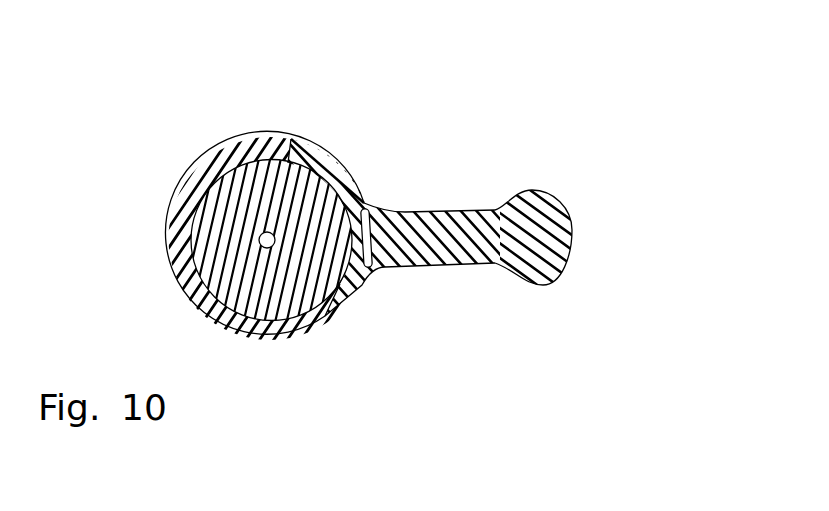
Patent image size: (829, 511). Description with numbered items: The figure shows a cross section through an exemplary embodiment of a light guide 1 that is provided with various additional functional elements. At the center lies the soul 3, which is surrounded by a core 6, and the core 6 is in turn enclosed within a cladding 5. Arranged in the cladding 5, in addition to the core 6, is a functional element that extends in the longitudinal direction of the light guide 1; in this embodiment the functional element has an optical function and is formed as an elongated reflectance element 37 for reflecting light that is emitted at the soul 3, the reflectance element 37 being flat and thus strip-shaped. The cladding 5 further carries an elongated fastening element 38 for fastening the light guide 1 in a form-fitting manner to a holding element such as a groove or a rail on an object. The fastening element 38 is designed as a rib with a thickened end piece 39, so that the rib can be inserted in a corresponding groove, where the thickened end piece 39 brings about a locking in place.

The light guide 1 is at (148, 140).
The soul 3 is at (264, 248).
The cladding 5 is at (318, 328).
The core 6 is at (278, 137).
The reflectance element 37 is at (387, 268).
The fastening element 38 is at (441, 213).
The thickened end piece 39 is at (525, 194).